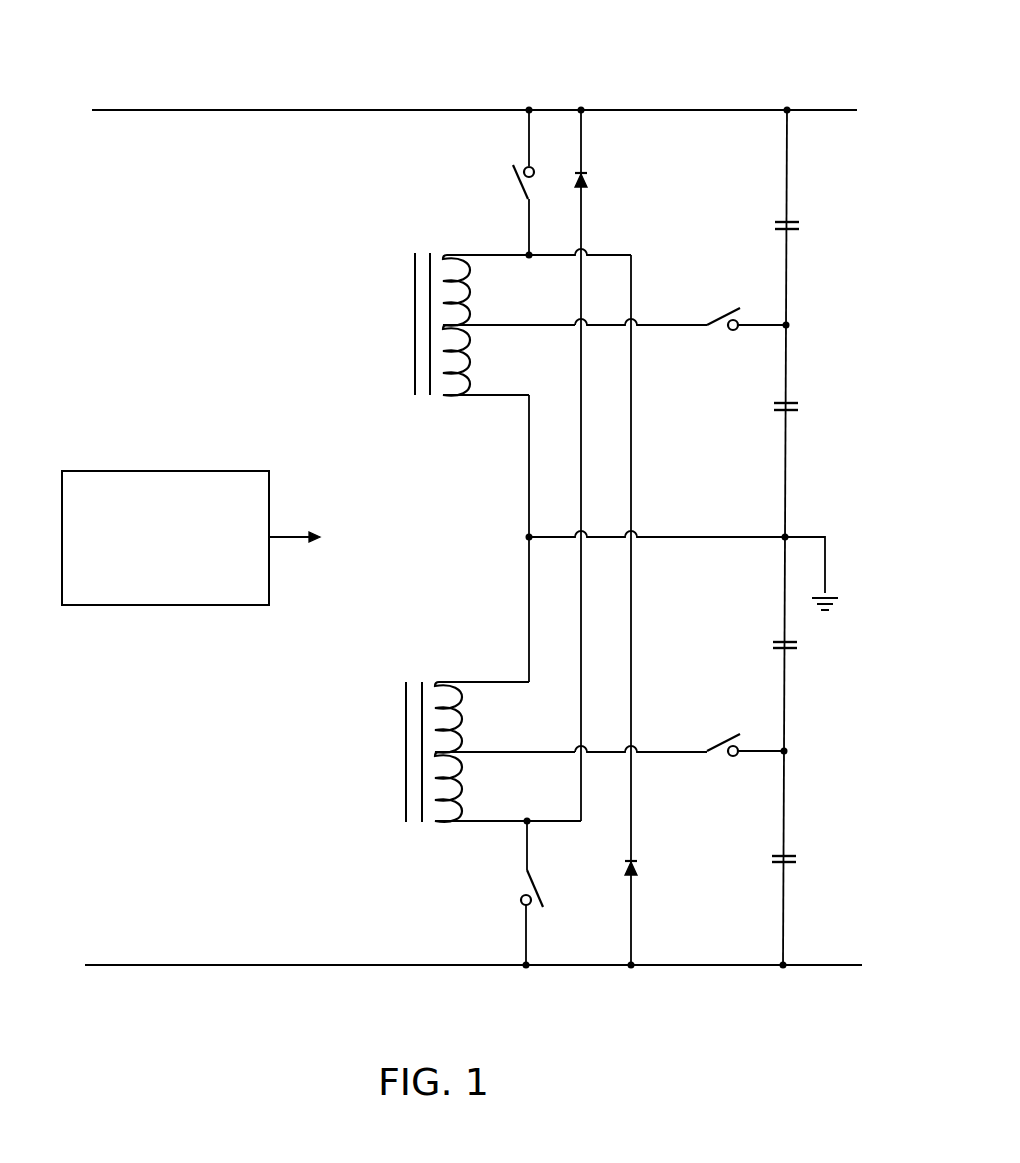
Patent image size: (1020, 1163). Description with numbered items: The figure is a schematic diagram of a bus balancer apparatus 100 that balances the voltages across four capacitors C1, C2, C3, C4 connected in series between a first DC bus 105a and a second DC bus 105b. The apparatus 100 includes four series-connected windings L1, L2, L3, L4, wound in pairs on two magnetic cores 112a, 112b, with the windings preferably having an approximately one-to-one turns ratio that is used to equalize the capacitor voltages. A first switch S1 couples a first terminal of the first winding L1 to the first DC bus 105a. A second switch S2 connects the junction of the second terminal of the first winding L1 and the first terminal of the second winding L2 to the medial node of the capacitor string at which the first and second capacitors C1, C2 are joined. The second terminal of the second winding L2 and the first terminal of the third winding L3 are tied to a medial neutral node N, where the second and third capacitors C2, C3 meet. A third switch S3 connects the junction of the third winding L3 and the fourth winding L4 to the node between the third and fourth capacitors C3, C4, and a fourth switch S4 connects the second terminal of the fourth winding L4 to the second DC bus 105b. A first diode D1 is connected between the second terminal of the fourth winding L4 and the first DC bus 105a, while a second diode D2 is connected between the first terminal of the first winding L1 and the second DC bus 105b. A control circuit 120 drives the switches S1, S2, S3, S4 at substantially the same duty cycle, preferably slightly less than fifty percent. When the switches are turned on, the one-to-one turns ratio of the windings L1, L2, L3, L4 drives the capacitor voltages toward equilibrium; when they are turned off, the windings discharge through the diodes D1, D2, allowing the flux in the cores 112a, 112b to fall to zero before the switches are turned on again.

The bus balancer apparatus 100 is at (652, 80).
The first DC bus 105a is at (229, 110).
The second DC bus 105b is at (180, 965).
The core 112a is at (440, 346).
The core 112b is at (438, 768).
The control circuit 120 is at (165, 471).
The first switch S1 is at (512, 182).
The second switch S2 is at (747, 308).
The third switch S3 is at (745, 734).
The fourth switch S4 is at (516, 893).
The first diode D1 is at (595, 181).
The second diode D2 is at (644, 867).
The first winding L1 is at (509, 290).
The second winding L2 is at (486, 360).
The third winding L3 is at (505, 717).
The fourth winding L4 is at (508, 787).
The first capacitor C1 is at (799, 228).
The second capacitor C2 is at (804, 409).
The third capacitor C3 is at (773, 647).
The fourth capacitor C4 is at (801, 861).
The neutral node N is at (833, 587).